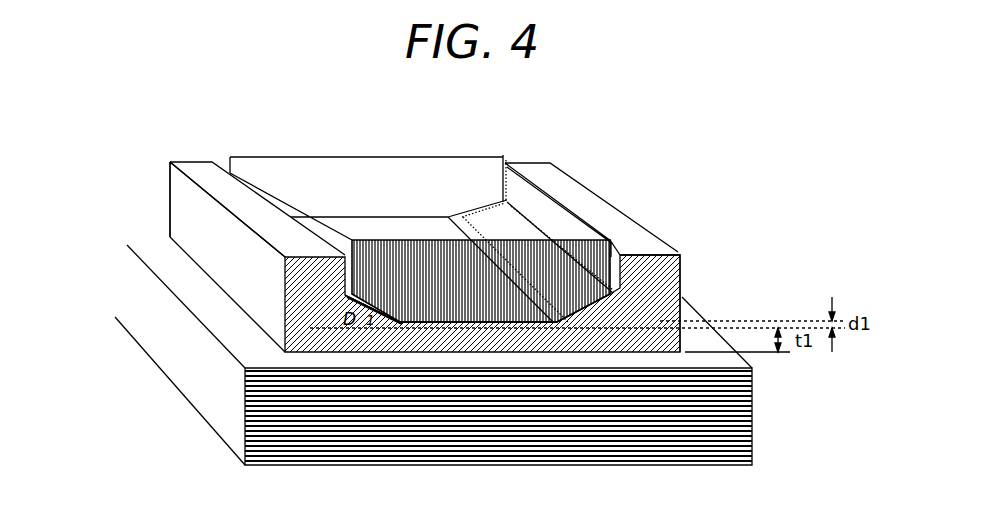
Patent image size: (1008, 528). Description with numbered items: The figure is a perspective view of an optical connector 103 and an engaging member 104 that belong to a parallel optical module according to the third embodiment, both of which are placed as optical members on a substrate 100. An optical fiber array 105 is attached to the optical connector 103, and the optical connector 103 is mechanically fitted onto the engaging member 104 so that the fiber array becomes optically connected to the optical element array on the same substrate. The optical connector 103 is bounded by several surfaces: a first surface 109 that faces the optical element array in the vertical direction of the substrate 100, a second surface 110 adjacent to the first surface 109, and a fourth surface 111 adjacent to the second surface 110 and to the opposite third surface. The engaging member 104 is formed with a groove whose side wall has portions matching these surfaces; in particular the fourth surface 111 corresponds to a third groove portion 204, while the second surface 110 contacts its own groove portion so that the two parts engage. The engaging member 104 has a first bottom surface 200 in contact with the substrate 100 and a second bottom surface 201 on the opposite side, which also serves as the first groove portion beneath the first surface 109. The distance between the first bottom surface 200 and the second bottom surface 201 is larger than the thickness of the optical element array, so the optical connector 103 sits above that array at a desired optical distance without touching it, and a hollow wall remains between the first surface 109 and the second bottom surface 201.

The substrate 100 is at (228, 382).
The optical connector 103 is at (220, 160).
The engaging member 104 is at (180, 217).
The optical fiber array 105 is at (615, 233).
The first surface 109 is at (373, 232).
The second surface 110 is at (500, 217).
The fourth surface 111 is at (562, 217).
The first bottom surface 200 is at (472, 355).
The second bottom surface 201 is at (427, 322).
The third groove portion 204 is at (620, 253).